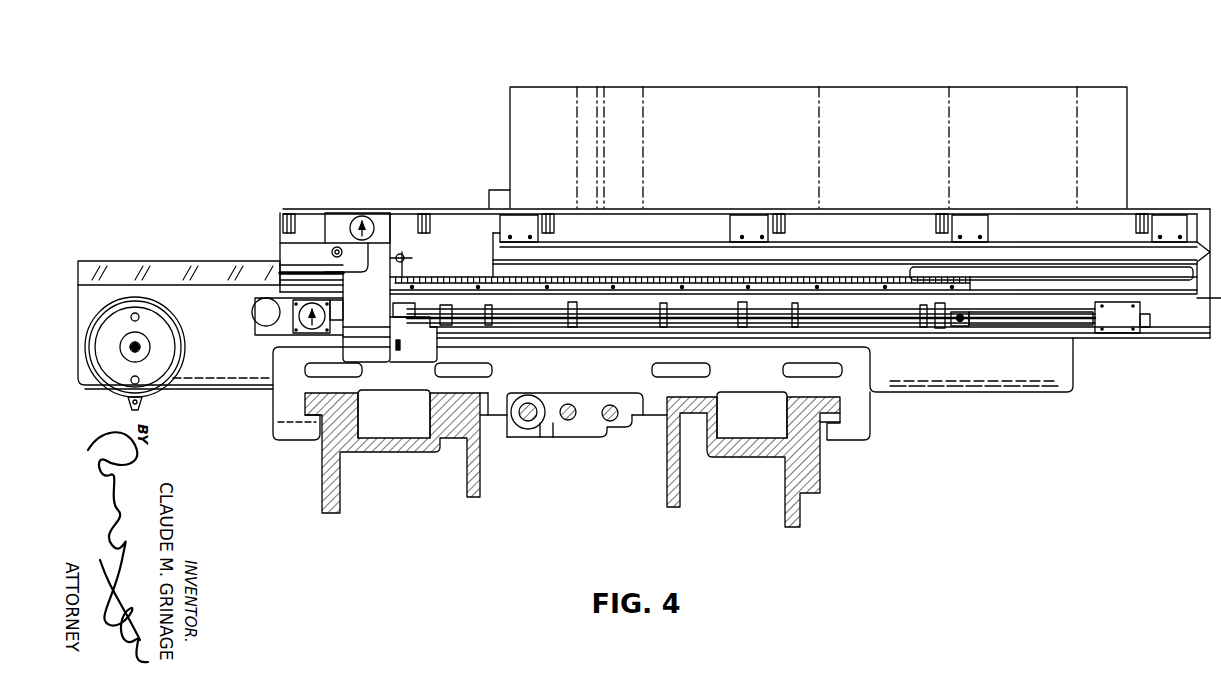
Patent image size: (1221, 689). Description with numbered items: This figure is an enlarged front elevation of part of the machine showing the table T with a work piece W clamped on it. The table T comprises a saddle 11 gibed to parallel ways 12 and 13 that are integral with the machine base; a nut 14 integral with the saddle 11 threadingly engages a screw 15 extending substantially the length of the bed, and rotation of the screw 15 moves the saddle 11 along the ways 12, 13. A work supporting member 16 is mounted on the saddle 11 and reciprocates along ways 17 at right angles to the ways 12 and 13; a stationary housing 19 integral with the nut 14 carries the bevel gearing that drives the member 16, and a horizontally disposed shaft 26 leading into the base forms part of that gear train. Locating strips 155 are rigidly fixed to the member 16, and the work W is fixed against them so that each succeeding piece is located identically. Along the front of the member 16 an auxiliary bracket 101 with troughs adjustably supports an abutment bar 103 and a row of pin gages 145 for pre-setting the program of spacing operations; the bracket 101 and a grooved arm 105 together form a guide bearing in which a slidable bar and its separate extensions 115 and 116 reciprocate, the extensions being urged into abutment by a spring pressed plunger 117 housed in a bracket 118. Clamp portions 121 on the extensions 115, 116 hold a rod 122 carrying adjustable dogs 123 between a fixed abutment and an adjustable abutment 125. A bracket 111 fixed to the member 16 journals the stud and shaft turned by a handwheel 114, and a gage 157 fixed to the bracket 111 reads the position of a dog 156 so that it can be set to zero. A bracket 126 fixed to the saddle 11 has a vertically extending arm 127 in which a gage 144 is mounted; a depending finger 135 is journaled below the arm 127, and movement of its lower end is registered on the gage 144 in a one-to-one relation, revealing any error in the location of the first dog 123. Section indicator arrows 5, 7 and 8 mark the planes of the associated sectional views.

The work W is at (728, 65).
The table T is at (412, 158).
The auxiliary bracket 101 is at (1093, 285).
The locating strips 155 is at (500, 190).
The work supporting member 16 is at (473, 254).
The gage 144 is at (377, 213).
The depending finger 135 is at (338, 268).
The pin gages 145 is at (310, 272).
The abutment bar 103 is at (281, 270).
The ways 17 is at (167, 268).
The handwheel 114 is at (266, 318).
The bracket 111 is at (288, 331).
The section line 5 is at (227, 333).
The section line 7 is at (313, 190).
The section line 8 is at (370, 166).
The vertically extending arm 127 is at (384, 318).
The bracket 126 is at (378, 356).
The gage 157 is at (330, 291).
The dog 156 is at (337, 312).
The extension 115 is at (556, 323).
The rod 122 is at (628, 311).
The adjustable dogs 123 is at (663, 328).
The clamp portions 121 is at (742, 332).
The adjustable abutment 125 is at (963, 333).
The extension 116 is at (1045, 325).
The spring pressed plunger 117 is at (1093, 333).
The bracket 118 is at (1122, 330).
The grooved arm 105 is at (1185, 333).
The saddle 11 is at (277, 382).
The way 12 is at (424, 452).
The nut 14 is at (527, 430).
The screw 15 is at (533, 398).
The horizontally disposed shaft 26 is at (569, 404).
The stationary housing 19 is at (605, 440).
The way 13 is at (740, 445).